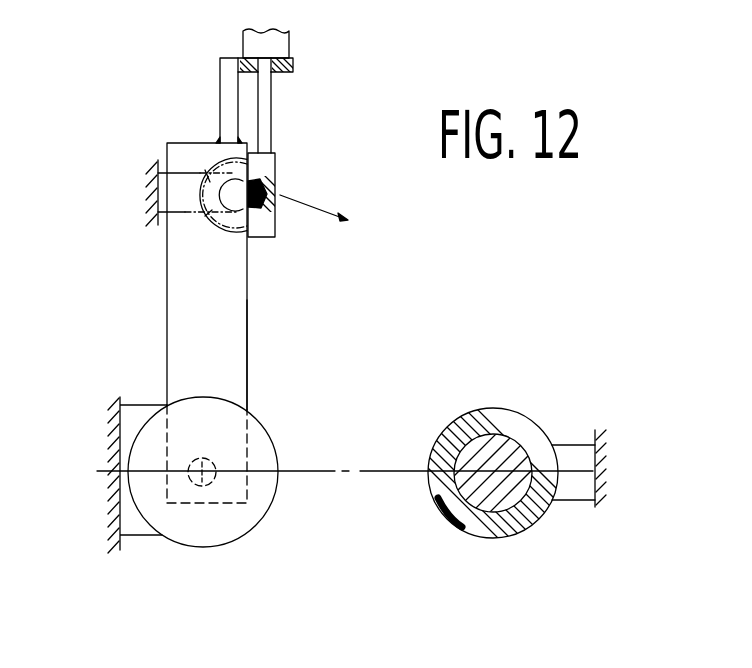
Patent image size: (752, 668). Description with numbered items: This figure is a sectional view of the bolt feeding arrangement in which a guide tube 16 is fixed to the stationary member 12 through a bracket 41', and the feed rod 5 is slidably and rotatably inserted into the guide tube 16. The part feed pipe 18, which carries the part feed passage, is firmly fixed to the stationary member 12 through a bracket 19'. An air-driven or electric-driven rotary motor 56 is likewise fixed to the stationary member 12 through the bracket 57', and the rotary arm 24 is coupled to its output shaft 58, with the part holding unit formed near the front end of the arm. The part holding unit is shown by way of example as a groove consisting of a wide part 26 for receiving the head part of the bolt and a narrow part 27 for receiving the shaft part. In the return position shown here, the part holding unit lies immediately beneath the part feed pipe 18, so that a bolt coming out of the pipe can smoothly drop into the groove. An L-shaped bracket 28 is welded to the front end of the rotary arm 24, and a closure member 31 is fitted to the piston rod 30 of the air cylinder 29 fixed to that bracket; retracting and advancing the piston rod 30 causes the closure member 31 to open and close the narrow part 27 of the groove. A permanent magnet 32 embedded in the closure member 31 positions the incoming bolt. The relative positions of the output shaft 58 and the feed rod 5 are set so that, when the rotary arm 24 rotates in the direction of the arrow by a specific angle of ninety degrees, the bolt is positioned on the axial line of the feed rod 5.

The feed rod 5 is at (468, 447).
The stationary member 12 is at (120, 429).
The guide tube 16 is at (512, 409).
The part feed pipe 18 is at (217, 232).
The bracket 19' is at (184, 254).
The rotary arm 24 is at (247, 327).
The wide part 26 is at (208, 190).
The narrow part 27 is at (229, 210).
The L-shaped bracket 28 is at (220, 83).
The air cylinder 29 is at (290, 42).
The piston rod 30 is at (272, 99).
The closure member 31 is at (267, 238).
The magnet 32 is at (270, 206).
The bracket 41' is at (573, 439).
The rotary motor 56 is at (265, 428).
The bracket 57' is at (137, 447).
The output shaft 58 is at (201, 457).